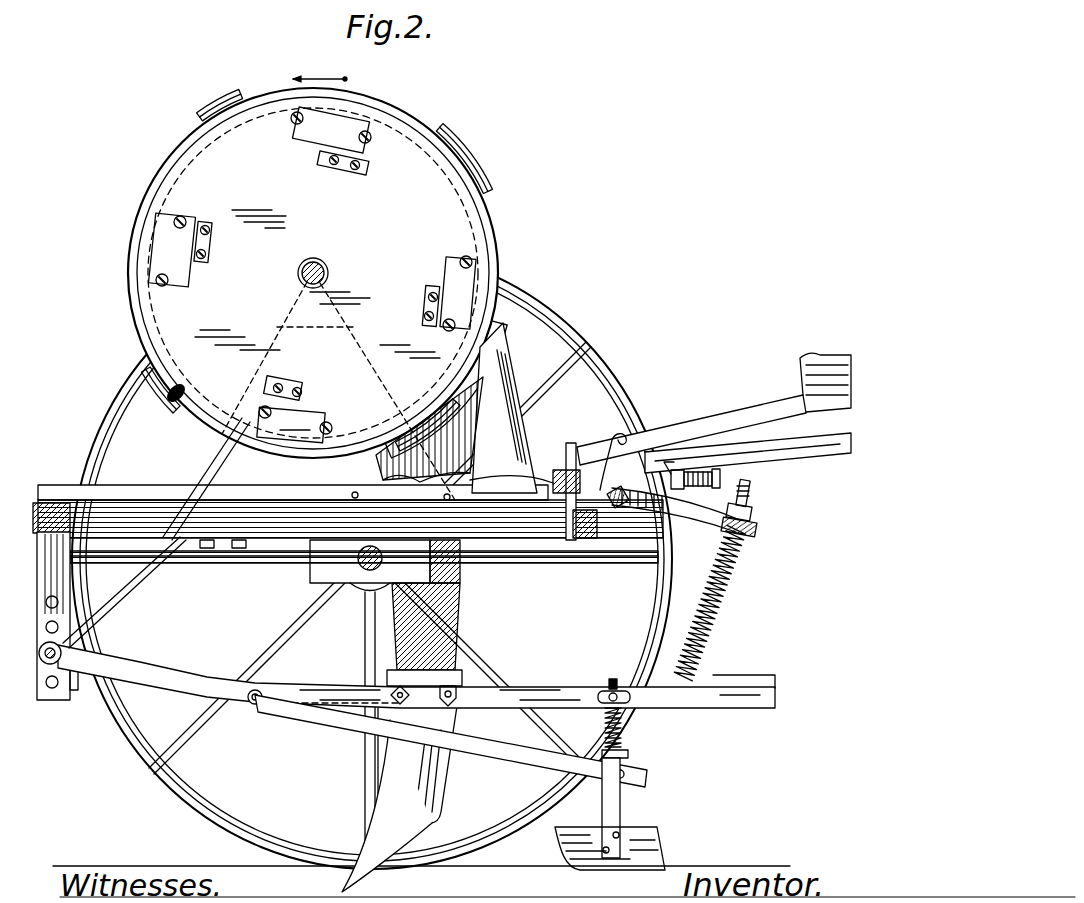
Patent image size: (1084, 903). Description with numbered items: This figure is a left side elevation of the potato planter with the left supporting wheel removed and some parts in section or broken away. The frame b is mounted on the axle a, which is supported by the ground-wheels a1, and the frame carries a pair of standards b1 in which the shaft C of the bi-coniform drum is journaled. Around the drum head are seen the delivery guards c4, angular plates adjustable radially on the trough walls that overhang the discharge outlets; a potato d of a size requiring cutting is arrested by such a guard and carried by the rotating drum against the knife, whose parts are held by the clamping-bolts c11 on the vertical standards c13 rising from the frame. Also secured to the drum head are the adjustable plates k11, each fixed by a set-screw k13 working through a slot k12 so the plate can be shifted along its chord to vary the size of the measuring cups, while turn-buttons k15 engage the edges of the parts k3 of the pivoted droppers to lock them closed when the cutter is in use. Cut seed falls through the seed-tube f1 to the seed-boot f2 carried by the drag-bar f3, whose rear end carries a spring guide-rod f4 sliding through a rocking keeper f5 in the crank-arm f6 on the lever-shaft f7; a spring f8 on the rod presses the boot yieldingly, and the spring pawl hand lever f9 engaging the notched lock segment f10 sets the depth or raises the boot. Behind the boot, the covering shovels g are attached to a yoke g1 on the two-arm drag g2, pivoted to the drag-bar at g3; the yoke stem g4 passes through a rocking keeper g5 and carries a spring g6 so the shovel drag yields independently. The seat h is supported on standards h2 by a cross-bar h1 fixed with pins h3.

The shaft C is at (326, 276).
The delivery guard c4 is at (212, 108).
The clamping-bolt c11 is at (475, 366).
The vertical standard c13 is at (512, 440).
The potato d is at (182, 392).
The dropper part k3 is at (312, 275).
The adjustable plate k11 is at (343, 168).
The slot k12 is at (330, 160).
The set-screw k13 is at (322, 163).
The turn-button k15 is at (295, 122).
The frame b is at (128, 508).
The standard b1 is at (196, 486).
The axle a is at (356, 560).
The ground-wheel a1 is at (366, 618).
The seed-tube f1 is at (458, 636).
The seed-boot f2 is at (436, 792).
The drag-bar f3 is at (92, 643).
The spring guide-rod f4 is at (750, 496).
The rocking keeper f5 is at (756, 524).
The crank-arm f6 is at (696, 512).
The lever-shaft f7 is at (606, 470).
The spring f8 is at (712, 612).
The spring pawl hand lever f9 is at (716, 470).
The notched lock segment f10 is at (678, 472).
The shovel g is at (660, 848).
The yoke g1 is at (620, 810).
The two-arm drag g2 is at (548, 760).
The pivot g3 is at (257, 704).
The stem g4 is at (614, 678).
The rocking keeper g5 is at (606, 692).
The spring g6 is at (624, 738).
The seat h is at (766, 415).
The cross-bar h1 is at (520, 478).
The standard h2 is at (566, 460).
The pin h3 is at (578, 478).